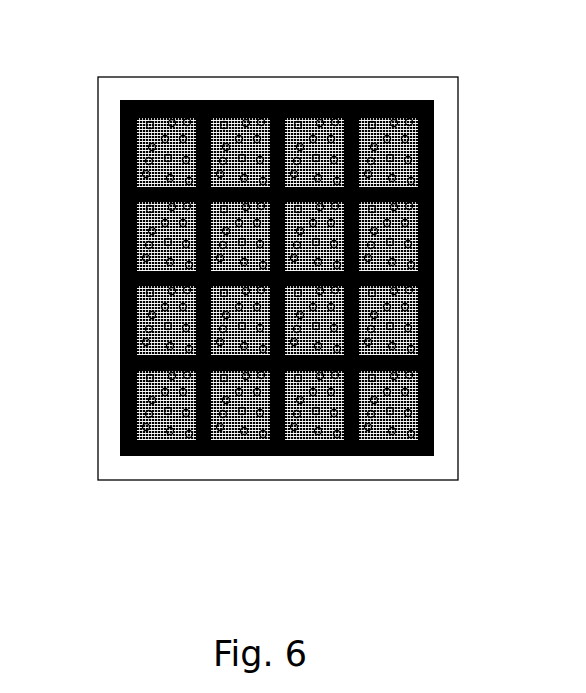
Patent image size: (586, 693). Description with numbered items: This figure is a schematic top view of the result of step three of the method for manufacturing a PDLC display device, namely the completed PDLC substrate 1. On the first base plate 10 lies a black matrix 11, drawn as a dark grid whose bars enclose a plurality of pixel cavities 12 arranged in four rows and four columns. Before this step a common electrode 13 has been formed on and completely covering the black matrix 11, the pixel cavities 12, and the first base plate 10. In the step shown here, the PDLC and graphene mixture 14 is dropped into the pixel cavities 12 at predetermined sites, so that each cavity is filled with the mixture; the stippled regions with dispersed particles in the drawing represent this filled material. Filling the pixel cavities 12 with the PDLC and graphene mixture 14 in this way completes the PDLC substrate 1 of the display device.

The PDLC substrate 1 is at (286, 283).
The first base plate 10 is at (412, 460).
The black matrix 11 is at (380, 92).
The pixel cavities 12 is at (387, 138).
The common electrode 13 is at (278, 92).
The PDLC and graphene mixture 14 is at (158, 92).